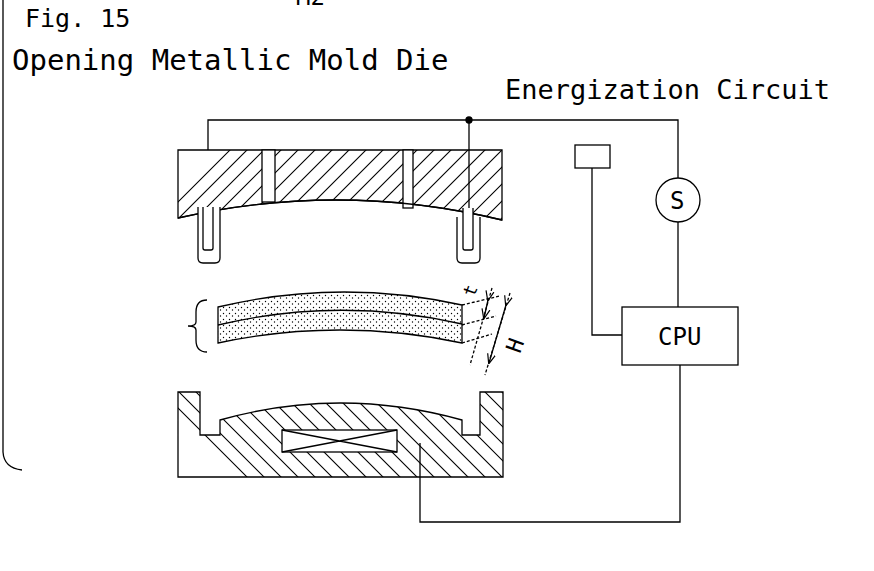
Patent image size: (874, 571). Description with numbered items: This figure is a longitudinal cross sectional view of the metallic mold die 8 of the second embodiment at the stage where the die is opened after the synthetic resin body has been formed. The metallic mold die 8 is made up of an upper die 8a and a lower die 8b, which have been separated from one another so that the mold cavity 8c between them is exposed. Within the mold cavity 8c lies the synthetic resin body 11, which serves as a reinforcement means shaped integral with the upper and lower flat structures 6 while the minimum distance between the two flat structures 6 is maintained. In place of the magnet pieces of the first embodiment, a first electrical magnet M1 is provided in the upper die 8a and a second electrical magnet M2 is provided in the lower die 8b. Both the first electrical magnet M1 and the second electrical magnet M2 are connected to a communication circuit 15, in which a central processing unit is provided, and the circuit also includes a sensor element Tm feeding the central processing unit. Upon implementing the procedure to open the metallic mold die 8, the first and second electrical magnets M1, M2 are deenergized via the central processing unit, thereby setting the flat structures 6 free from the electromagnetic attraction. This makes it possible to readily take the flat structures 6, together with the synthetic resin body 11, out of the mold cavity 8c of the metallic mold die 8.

The metallic mold die 8 is at (520, 368).
The upper die 8a is at (502, 188).
The lower die 8b is at (503, 450).
The mold cavity 8c is at (325, 205).
The flat structures 6 is at (383, 318).
The synthetic resin body 11 is at (305, 322).
The communication circuit 15 is at (702, 293).
The first electrical magnet M1 is at (198, 232).
The second electrical magnet M2 is at (322, 452).
The temperature sensor Tm is at (610, 155).